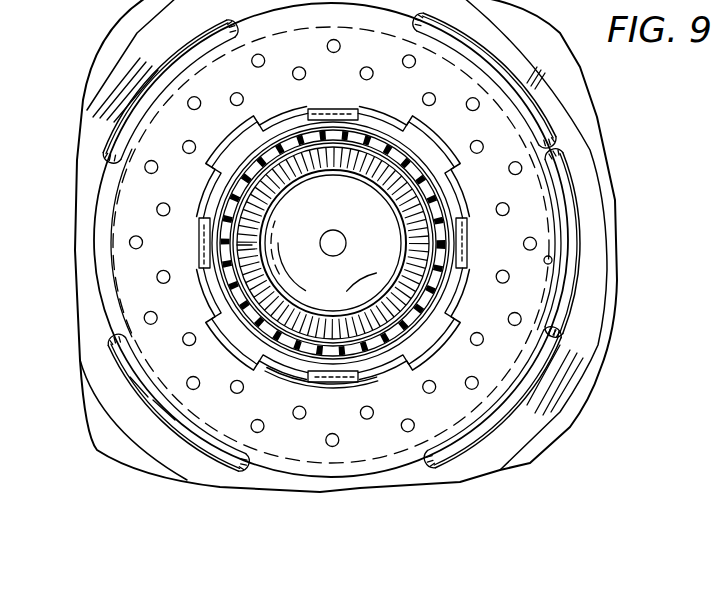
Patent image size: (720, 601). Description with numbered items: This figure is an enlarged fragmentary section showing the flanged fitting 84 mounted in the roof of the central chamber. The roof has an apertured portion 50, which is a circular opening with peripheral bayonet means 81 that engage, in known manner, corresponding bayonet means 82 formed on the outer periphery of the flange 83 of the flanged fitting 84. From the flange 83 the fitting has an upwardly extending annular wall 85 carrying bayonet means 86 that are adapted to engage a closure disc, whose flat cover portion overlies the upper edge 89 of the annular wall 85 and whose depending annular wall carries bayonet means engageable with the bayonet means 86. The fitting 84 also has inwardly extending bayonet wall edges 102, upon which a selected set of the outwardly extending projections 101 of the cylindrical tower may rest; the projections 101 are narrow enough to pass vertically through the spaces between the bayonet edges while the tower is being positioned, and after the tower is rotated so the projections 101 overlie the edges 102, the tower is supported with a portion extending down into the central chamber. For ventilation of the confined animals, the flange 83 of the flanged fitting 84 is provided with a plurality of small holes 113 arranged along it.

The apertured portion 50 is at (552, 260).
The bayonet means 81 is at (166, 55).
The bayonet means 82 is at (144, 63).
The flange 83 is at (507, 123).
The flanged fitting 84 is at (558, 207).
The annular wall 85 is at (370, 107).
The bayonet means 86 is at (437, 133).
The upper edge 89 is at (460, 195).
The projections 101 is at (467, 243).
The bayonet wall edges 102 is at (463, 293).
The small holes 113 is at (252, 427).